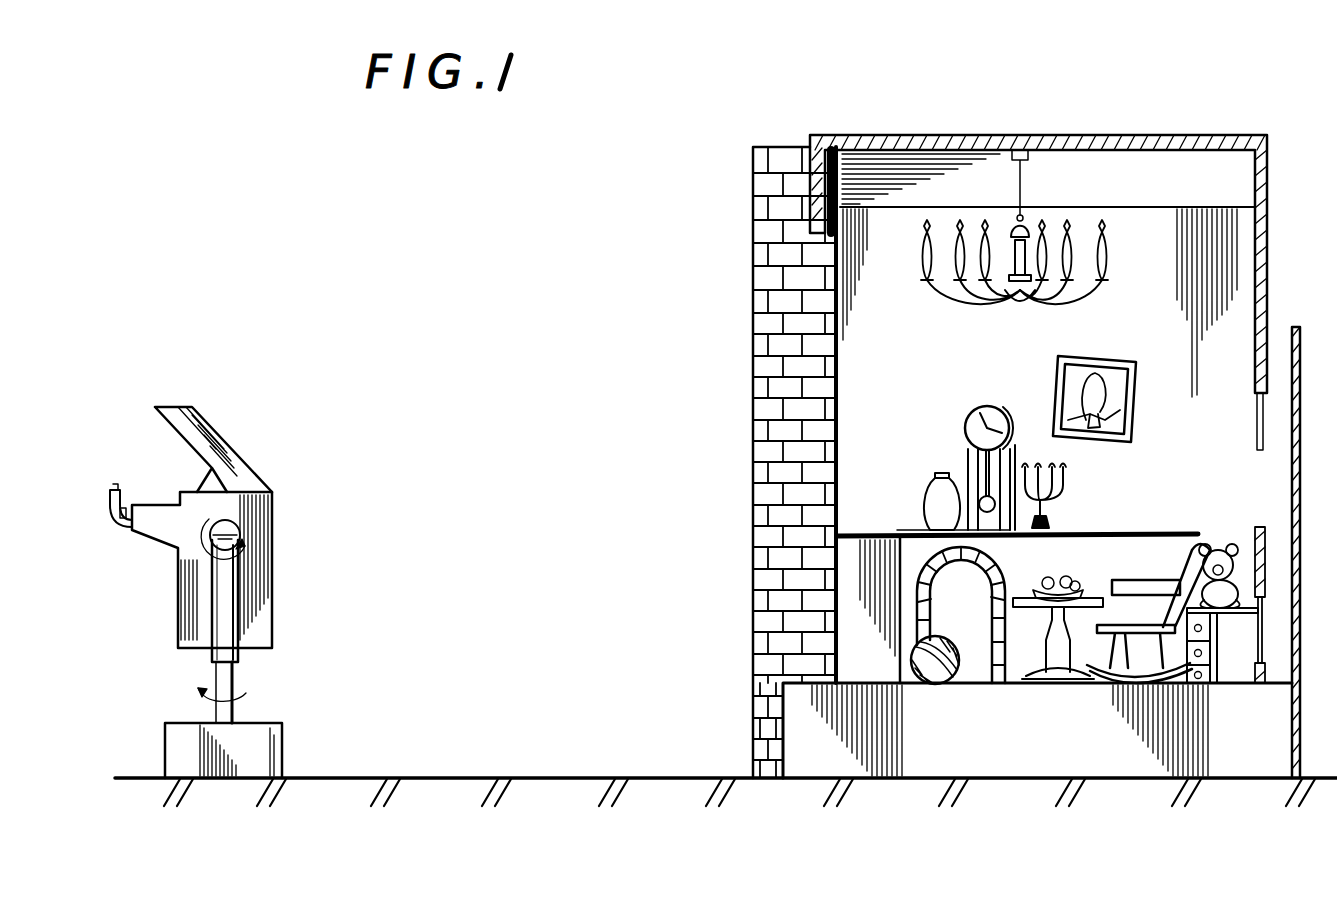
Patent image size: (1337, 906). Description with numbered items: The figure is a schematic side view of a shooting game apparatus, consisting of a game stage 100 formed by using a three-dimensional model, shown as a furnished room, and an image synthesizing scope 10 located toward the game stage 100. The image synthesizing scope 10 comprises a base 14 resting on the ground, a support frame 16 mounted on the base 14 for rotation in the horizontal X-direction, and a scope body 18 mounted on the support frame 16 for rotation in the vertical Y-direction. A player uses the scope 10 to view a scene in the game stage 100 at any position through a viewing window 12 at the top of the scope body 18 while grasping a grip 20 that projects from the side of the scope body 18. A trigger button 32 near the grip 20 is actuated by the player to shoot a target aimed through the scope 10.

The image synthesizing scope 10 is at (200, 567).
The viewing window 12 is at (162, 426).
The base 14 is at (252, 742).
The support frame 16 is at (223, 640).
The scope body 18 is at (248, 592).
The grip 20 is at (108, 497).
The trigger button 32 is at (118, 495).
The game stage 100 is at (1044, 125).